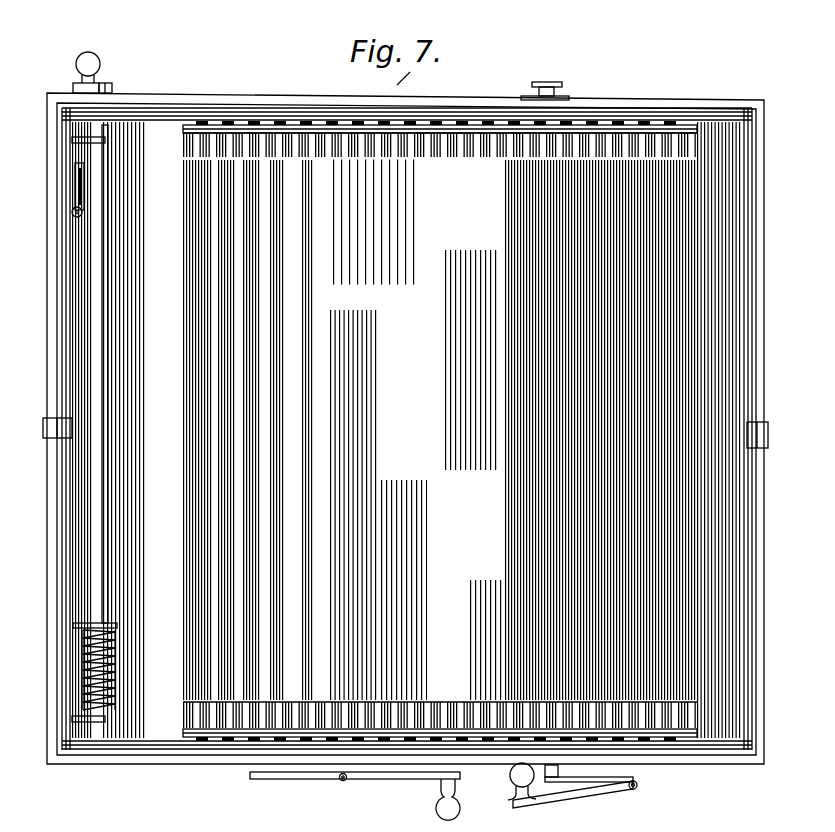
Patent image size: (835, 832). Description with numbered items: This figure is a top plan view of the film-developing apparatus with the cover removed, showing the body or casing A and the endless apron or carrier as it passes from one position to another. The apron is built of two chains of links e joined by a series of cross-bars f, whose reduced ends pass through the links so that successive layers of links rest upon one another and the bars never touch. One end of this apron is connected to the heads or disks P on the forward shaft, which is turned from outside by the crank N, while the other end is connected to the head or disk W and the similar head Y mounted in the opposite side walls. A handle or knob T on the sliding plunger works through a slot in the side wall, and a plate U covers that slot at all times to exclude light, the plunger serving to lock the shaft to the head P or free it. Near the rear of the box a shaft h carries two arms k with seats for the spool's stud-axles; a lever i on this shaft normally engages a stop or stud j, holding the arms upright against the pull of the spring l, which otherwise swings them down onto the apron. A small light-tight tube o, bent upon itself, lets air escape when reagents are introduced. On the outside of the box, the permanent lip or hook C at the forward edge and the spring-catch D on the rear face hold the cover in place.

The body or casing A is at (405, 417).
The links e is at (397, 142).
The cross-bars f is at (380, 153).
The head Y is at (213, 126).
The heads or disks P is at (510, 125).
The lever i is at (98, 58).
The stop or stud j is at (112, 90).
The handle or knob T is at (563, 84).
The plate U is at (573, 96).
The arms k is at (104, 140).
The tube o is at (86, 194).
The shaft h is at (105, 606).
The spring l is at (117, 664).
The spring-catch D is at (43, 428).
The permanent lip or hook C is at (769, 435).
The head or disk W is at (227, 739).
The crank N is at (612, 793).